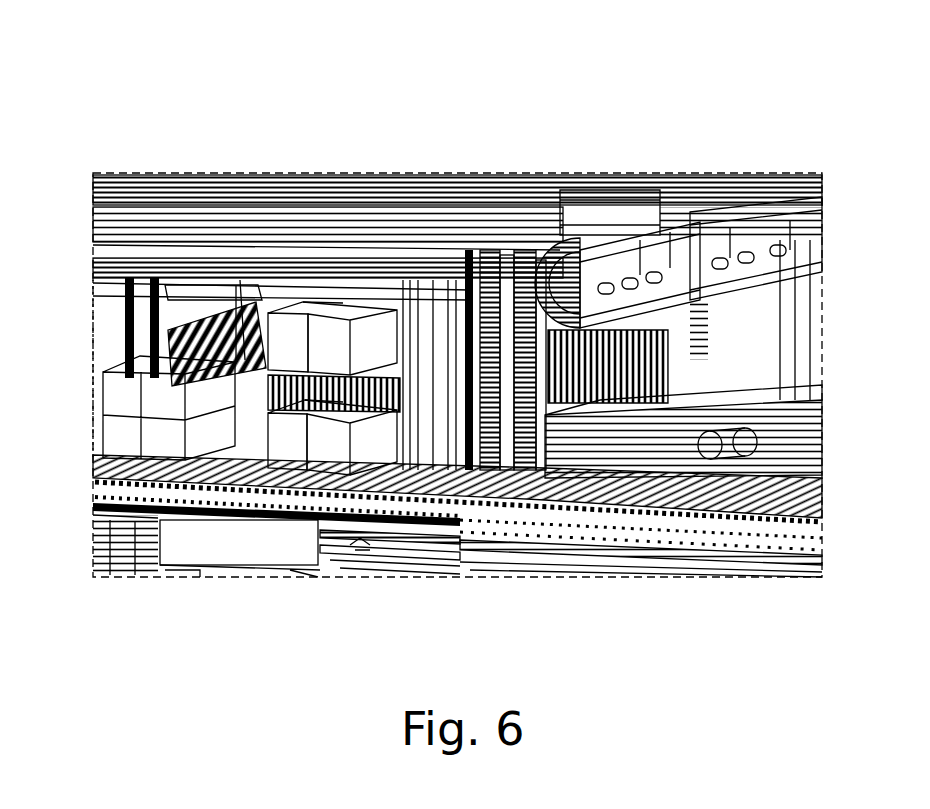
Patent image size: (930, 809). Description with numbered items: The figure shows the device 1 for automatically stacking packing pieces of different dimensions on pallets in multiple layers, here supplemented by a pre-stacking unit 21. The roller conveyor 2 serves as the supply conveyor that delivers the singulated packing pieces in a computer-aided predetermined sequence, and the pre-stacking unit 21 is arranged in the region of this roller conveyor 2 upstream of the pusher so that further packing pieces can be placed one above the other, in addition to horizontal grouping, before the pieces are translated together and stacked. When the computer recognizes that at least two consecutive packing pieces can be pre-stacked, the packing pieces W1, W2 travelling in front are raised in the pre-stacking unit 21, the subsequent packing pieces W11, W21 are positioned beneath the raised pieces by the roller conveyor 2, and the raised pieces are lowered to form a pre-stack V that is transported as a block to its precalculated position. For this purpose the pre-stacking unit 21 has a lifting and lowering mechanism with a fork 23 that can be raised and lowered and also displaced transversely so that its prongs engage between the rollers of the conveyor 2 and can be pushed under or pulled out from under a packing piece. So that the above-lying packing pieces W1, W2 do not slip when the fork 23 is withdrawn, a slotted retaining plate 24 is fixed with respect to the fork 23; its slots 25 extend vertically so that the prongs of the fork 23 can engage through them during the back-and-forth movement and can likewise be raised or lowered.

The device 1 is at (143, 132).
The roller conveyor 2 is at (718, 542).
The pre-stacking unit 21 is at (414, 320).
The fork 23 is at (385, 514).
The slotted retaining plate 24 is at (590, 188).
The slots 25 is at (420, 378).
The pre-stack V is at (155, 434).
The packing piece W1 is at (284, 326).
The packing piece W2 is at (335, 335).
The packing piece W11 is at (271, 466).
The packing piece W21 is at (318, 466).